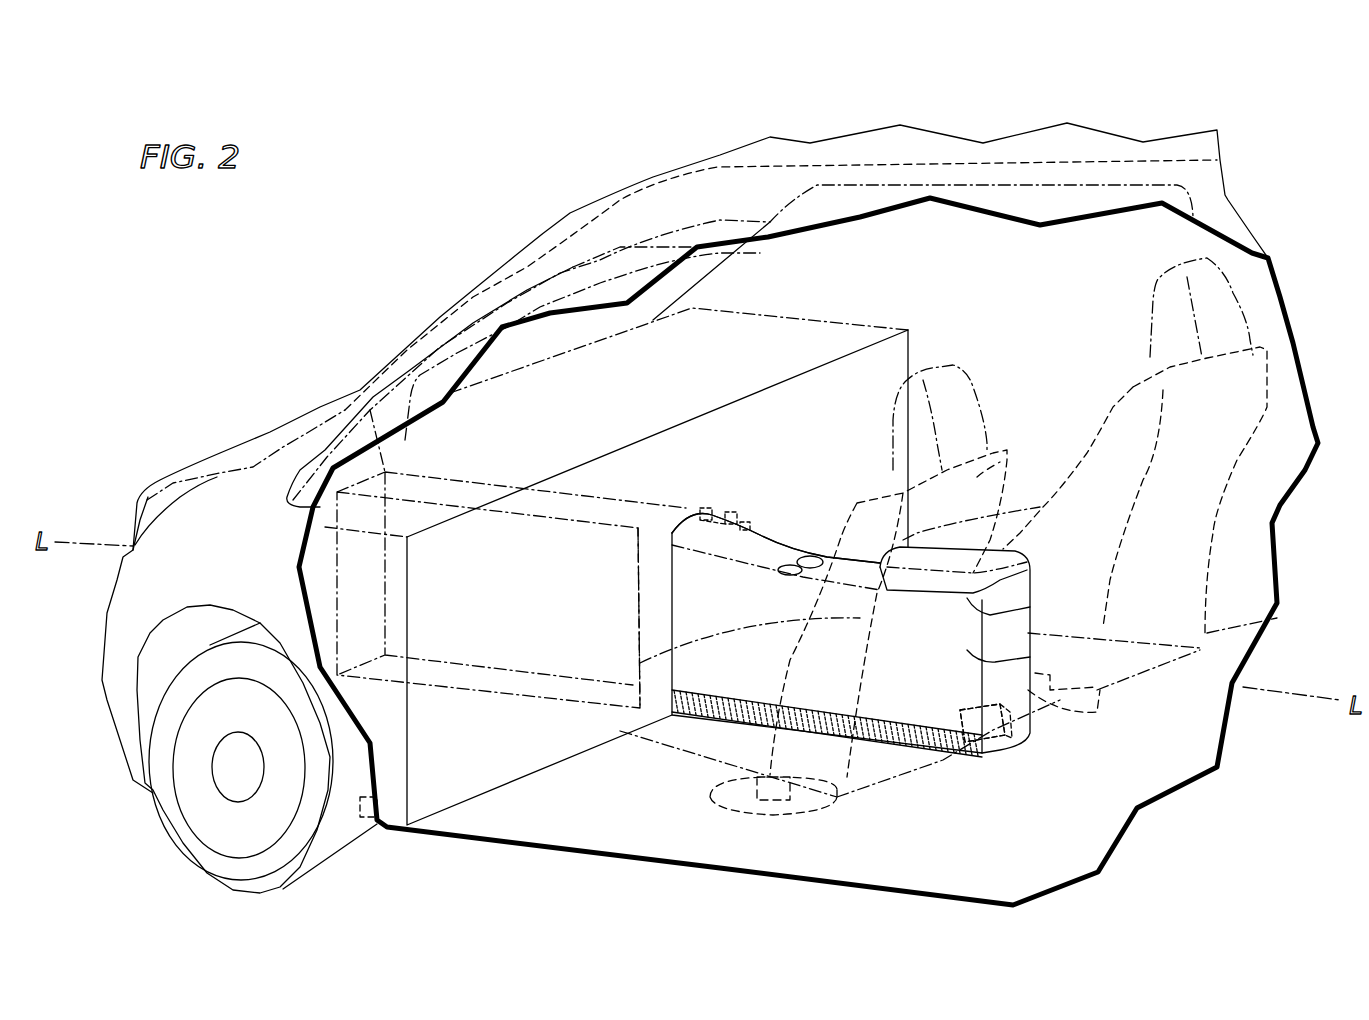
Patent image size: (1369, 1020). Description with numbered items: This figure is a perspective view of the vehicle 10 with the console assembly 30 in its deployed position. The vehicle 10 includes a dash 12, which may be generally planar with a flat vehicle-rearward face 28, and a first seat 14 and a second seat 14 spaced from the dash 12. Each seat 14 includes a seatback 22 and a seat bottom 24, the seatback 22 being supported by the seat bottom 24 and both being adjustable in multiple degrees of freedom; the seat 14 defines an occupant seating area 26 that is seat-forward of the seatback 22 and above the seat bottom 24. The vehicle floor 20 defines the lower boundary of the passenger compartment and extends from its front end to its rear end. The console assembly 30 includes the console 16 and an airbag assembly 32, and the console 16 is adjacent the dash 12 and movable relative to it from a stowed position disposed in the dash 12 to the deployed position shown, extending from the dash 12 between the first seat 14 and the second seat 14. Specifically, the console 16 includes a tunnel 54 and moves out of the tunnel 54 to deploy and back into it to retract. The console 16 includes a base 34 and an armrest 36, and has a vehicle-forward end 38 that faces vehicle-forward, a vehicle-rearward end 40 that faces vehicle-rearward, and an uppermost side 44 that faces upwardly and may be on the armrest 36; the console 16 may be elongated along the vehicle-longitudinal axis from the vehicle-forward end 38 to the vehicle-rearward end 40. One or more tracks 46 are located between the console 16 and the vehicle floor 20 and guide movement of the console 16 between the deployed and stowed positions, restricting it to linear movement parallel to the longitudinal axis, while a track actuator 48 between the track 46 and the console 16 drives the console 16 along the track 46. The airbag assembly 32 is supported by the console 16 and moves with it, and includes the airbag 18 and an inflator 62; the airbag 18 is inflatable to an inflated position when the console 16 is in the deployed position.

The vehicle 10 is at (1008, 90).
The dash 12 is at (625, 438).
The seat 14 is at (1265, 622).
The console 16 is at (697, 603).
The airbag 18 is at (716, 508).
The vehicle floor 20 is at (1145, 758).
The seatback 22 is at (1233, 380).
The seat bottom 24 is at (690, 735).
The occupant seating area 26 is at (1087, 373).
The vehicle-rearward face 28 is at (753, 433).
The console assembly 30 is at (965, 762).
The airbag assembly 32 is at (742, 508).
The base 34 is at (965, 660).
The armrest 36 is at (1005, 575).
The vehicle-forward end 38 is at (635, 583).
The vehicle-rearward end 40 is at (1032, 608).
The uppermost side 44 is at (923, 535).
The track 46 is at (1018, 735).
The track actuator 48 is at (990, 713).
The tunnel 54 is at (495, 490).
The inflator 62 is at (752, 522).